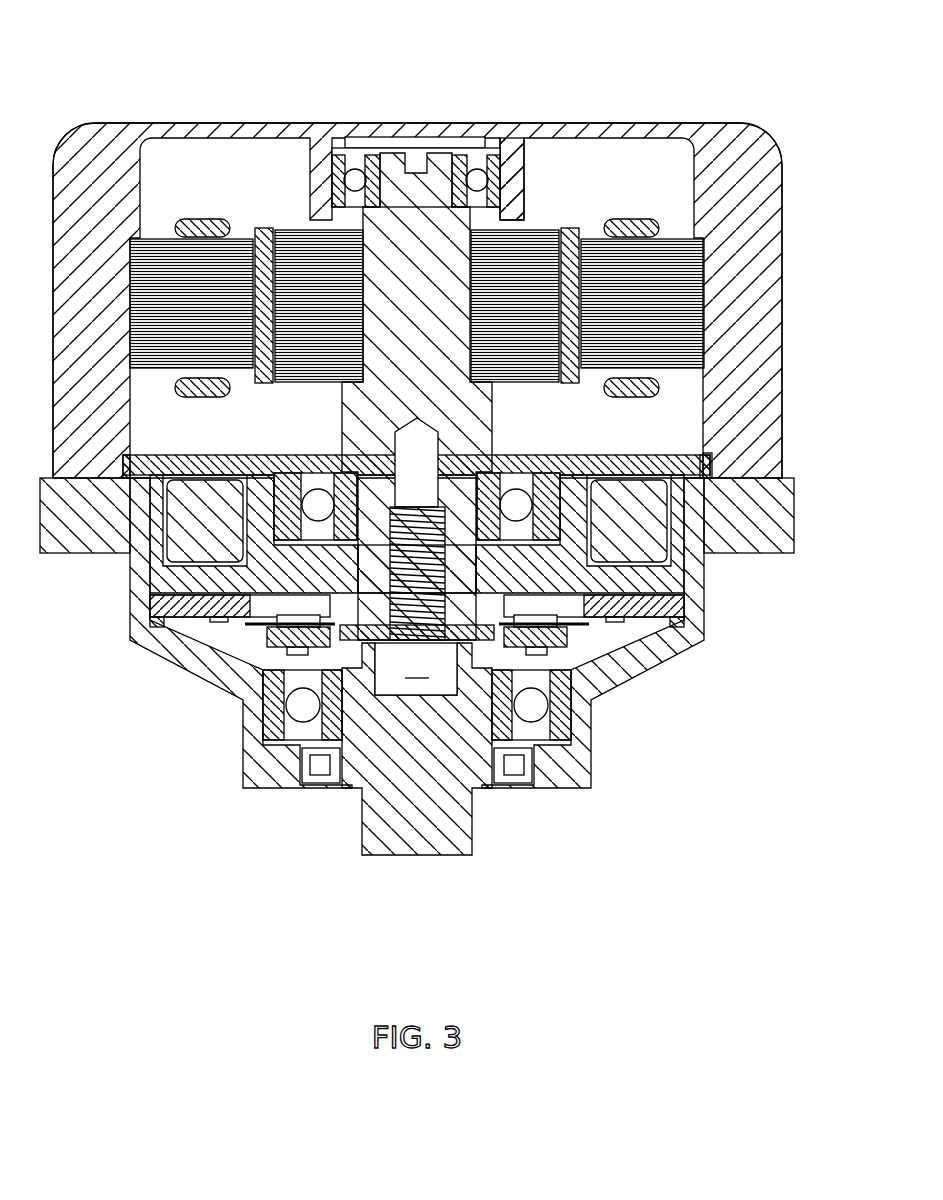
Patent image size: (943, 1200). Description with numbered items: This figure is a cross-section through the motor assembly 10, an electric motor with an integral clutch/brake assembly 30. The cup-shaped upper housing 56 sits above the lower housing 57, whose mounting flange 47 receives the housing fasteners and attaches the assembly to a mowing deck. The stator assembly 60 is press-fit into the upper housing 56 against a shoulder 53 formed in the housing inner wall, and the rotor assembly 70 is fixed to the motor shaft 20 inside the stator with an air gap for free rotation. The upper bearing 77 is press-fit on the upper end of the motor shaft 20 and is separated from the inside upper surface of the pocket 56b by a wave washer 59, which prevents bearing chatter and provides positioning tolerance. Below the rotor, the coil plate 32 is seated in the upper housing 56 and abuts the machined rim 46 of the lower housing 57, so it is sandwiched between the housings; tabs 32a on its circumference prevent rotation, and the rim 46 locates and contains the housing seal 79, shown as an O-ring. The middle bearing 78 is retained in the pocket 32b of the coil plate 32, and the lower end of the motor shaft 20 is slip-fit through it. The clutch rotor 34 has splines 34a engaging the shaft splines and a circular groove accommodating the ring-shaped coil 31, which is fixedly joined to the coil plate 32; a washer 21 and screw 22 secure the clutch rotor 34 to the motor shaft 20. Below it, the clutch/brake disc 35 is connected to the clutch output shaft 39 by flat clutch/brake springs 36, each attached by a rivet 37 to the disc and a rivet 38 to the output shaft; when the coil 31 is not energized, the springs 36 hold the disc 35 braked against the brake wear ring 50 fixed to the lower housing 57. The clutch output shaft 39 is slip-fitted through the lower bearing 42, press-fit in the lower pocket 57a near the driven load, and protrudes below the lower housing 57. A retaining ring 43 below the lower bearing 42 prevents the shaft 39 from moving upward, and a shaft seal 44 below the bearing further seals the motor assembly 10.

The motor assembly 10 is at (190, 55).
The upper housing 56 is at (125, 124).
The pocket 56b is at (500, 180).
The wave washer 59 is at (345, 146).
The upper bearing 77 is at (355, 176).
The stator assembly 60 is at (175, 194).
The rotor assembly 70 is at (289, 194).
The shoulder 53 is at (687, 243).
The clutch/brake assembly 30 is at (160, 434).
The motor shaft 20 is at (345, 412).
The coil plate 32 is at (592, 457).
The rim 46 is at (698, 466).
The tab 32a is at (712, 462).
The housing seal 79 is at (123, 480).
The clutch rotor 34 is at (668, 578).
The coil 31 is at (205, 500).
The splines 34a is at (457, 568).
The pocket 32b is at (285, 474).
The middle bearing 78 is at (515, 500).
The mounting flange 47 is at (757, 555).
The lower housing 57 is at (597, 775).
The clutch/brake disc 35 is at (167, 603).
The clutch/brake springs 36 is at (585, 620).
The rivet 38 is at (220, 623).
The rivet 37 is at (287, 652).
The brake wear ring 50 is at (680, 622).
The washer 21 is at (470, 637).
The clutch output shaft 39 is at (465, 855).
The screw 22 is at (416, 669).
The lower bearing 42 is at (302, 705).
The lower pocket 57a is at (575, 727).
The retaining ring 43 is at (315, 746).
The shaft seal 44 is at (320, 780).